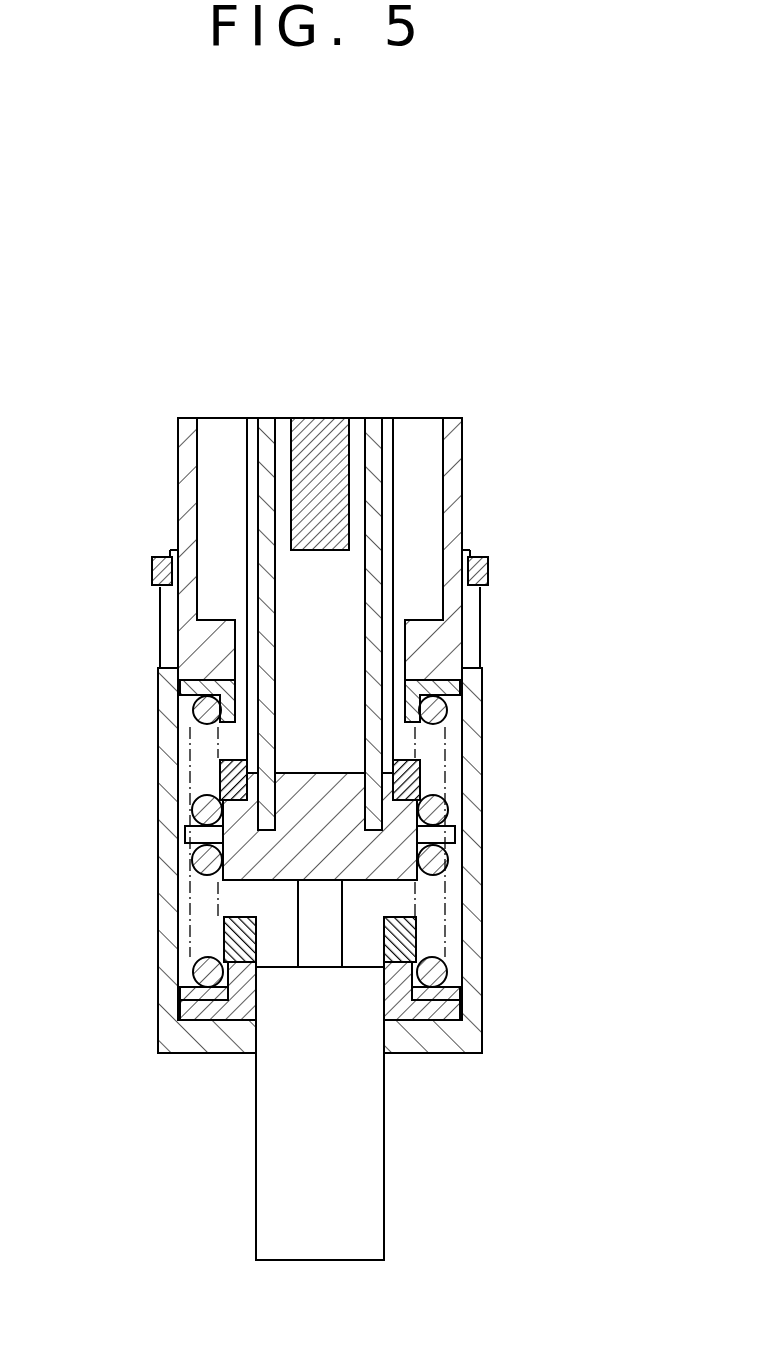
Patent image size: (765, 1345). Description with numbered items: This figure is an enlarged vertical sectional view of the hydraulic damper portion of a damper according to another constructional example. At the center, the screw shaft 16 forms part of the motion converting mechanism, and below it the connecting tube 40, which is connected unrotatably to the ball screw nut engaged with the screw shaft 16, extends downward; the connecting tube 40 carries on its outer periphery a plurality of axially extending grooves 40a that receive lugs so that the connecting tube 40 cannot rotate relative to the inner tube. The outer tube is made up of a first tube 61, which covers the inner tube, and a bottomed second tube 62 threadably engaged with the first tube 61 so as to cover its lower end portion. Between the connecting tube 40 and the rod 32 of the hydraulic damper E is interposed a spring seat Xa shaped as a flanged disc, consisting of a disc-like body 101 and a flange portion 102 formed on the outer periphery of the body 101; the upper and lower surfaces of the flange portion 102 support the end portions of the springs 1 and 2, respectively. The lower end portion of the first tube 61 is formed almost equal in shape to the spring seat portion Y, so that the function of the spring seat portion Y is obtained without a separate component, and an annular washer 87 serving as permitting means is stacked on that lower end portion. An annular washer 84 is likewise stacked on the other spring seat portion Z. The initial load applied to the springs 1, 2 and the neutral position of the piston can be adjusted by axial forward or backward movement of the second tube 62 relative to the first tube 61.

The spring 1 is at (193, 704).
The spring 2 is at (191, 861).
The screw shaft 16 is at (332, 423).
The rod 32 is at (298, 895).
The connecting tube 40 is at (268, 420).
The grooves 40a is at (385, 443).
The first tube 61 is at (463, 488).
The second tube 62 is at (157, 1023).
The annular washer 84 is at (460, 992).
The annular washer 87 is at (460, 686).
The disc-like body 101 is at (448, 815).
The flange portion 102 is at (455, 840).
The hydraulic damper E is at (384, 1100).
The spring seat Xa is at (422, 790).
The spring seat portion Y is at (463, 670).
The spring seat portion Z is at (465, 1010).